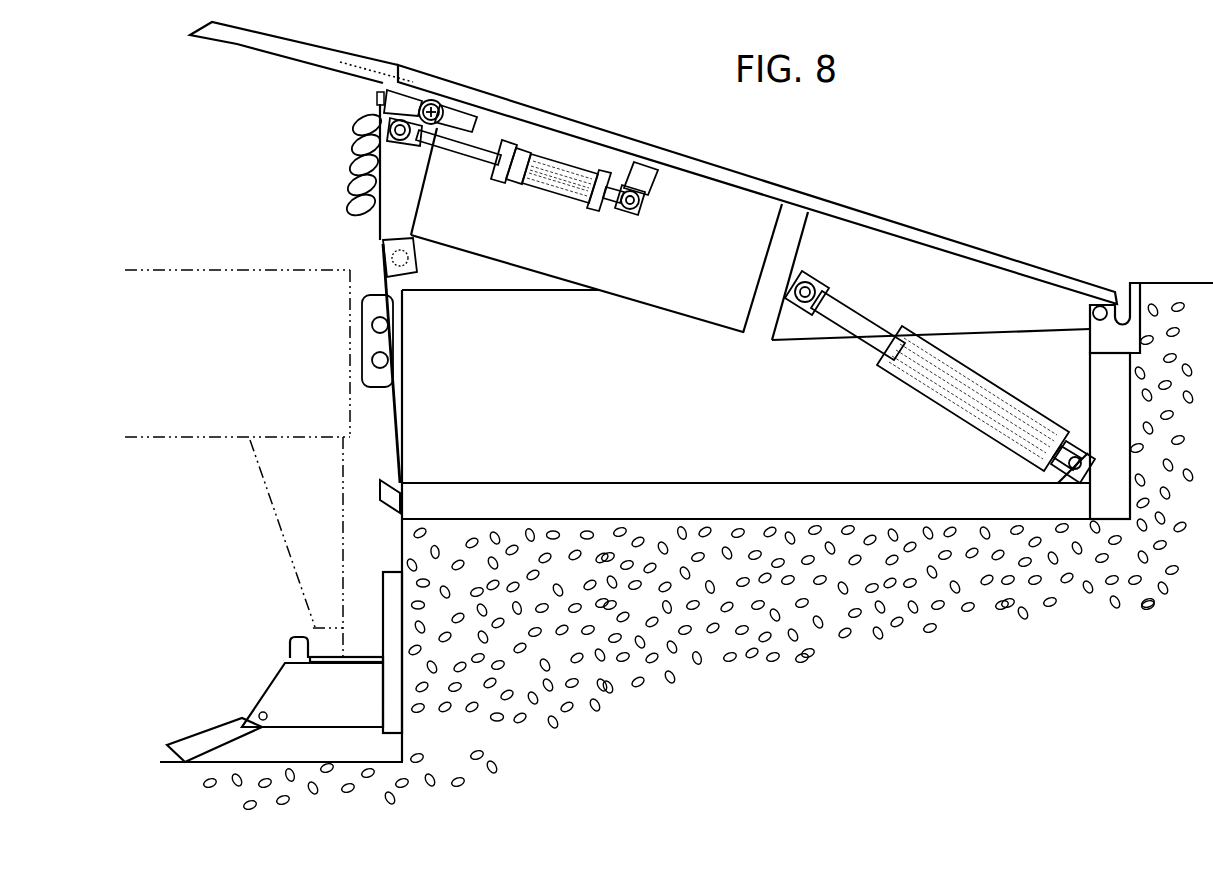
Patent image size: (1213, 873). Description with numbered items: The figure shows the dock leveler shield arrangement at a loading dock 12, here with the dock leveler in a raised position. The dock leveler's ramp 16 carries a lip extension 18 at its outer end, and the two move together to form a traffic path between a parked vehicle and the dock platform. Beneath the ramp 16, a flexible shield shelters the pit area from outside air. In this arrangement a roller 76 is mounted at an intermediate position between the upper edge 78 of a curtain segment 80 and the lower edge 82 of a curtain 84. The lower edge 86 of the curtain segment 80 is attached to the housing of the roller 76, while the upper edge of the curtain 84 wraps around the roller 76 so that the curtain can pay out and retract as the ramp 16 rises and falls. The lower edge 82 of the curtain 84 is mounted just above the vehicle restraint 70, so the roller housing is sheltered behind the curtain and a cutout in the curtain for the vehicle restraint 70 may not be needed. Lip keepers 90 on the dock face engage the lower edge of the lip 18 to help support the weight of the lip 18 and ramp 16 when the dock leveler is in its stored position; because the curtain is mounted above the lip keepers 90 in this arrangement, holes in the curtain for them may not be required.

The loading dock 12 is at (400, 553).
The ramp 16 is at (922, 232).
The lip extension 18 is at (284, 58).
The vehicle restraint 70 is at (298, 637).
The roller 76 is at (418, 260).
The upper edge of curtain segment 78 is at (378, 104).
The curtain segment 80 is at (381, 212).
The lower edge of curtain 82 is at (398, 482).
The curtain 84 is at (396, 434).
The lower edge of curtain segment 86 is at (378, 236).
The lip keeper 90 is at (386, 492).